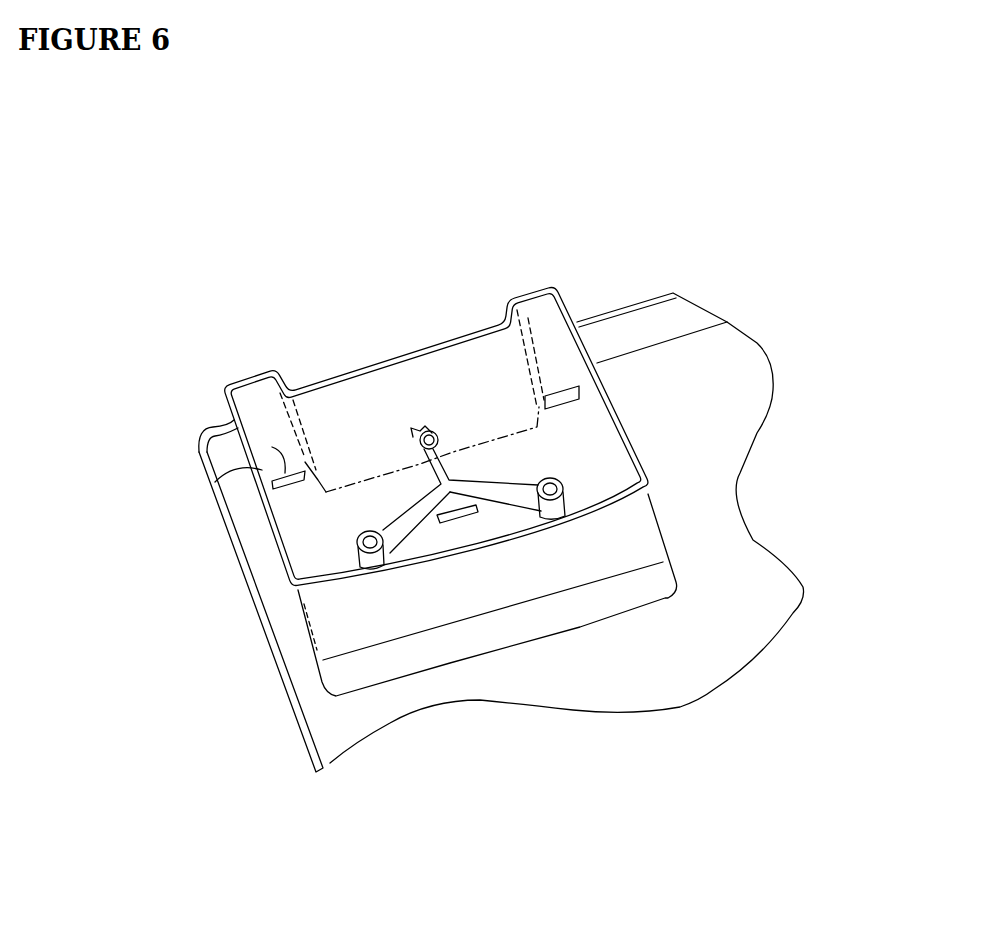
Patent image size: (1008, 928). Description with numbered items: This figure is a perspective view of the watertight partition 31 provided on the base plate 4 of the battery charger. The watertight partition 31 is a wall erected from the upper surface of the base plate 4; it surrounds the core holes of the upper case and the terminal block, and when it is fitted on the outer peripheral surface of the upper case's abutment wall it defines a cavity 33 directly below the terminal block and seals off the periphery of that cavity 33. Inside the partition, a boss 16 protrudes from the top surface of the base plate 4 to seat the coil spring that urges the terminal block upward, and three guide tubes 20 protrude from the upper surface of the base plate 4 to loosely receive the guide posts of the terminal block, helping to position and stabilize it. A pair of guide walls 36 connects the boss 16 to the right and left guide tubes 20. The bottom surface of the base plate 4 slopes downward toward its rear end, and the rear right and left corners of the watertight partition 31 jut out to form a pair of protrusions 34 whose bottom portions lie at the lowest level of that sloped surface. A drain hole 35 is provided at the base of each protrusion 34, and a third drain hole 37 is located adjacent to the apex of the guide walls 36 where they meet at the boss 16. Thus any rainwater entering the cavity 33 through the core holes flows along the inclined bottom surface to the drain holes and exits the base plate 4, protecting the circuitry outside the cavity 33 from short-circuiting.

The base plate 4 is at (673, 360).
The boss 16 is at (463, 455).
The guide tubes 20 is at (428, 432).
The watertight partition 31 is at (400, 380).
The cavity 33 is at (345, 413).
The protrusions 34 is at (252, 400).
The drain hole 35 is at (272, 446).
The guide walls 36 is at (412, 538).
The third drain hole 37 is at (462, 518).